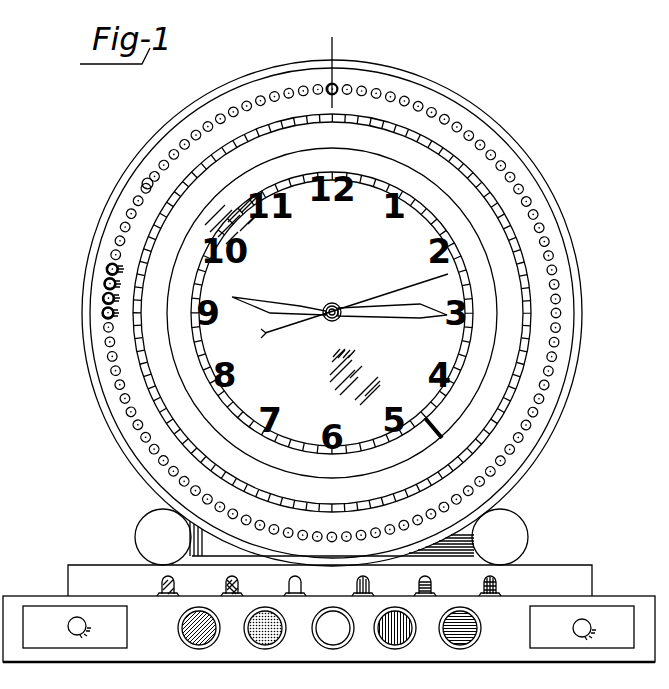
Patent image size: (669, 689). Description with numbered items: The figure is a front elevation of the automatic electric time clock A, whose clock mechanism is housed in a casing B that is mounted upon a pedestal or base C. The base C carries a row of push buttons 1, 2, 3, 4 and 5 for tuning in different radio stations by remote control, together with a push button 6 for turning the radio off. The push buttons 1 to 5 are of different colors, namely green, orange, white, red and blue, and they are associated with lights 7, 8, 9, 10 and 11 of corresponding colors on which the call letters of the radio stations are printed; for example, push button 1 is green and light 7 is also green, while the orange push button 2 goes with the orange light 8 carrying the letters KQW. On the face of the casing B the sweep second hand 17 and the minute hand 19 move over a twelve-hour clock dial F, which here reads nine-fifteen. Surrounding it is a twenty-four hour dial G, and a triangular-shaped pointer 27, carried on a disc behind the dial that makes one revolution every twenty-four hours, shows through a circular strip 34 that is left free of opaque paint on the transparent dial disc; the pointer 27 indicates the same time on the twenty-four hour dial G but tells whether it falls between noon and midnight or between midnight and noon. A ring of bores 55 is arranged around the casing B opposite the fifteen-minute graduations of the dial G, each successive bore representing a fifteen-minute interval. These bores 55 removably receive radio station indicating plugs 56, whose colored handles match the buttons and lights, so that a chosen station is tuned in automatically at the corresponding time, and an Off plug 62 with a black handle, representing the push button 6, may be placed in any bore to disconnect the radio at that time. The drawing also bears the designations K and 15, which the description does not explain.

The automatic electric time clock A is at (587, 229).
The casing B is at (586, 295).
The base C is at (558, 566).
The twelve-hour clock dial F is at (462, 344).
The twenty-four hour dial G is at (533, 337).
The ring of holes K is at (518, 457).
The alignment mark 15 is at (330, 40).
The sweep second hand 17 is at (421, 283).
The minute hand 19 is at (409, 313).
The triangular-shaped pointer 27 is at (432, 426).
The circular strip 34 is at (478, 253).
The bores 55 is at (146, 181).
The radio station indicating plugs 56 is at (336, 85).
The Off plug 62 is at (111, 266).
The push button 1 is at (175, 584).
The push button 2 is at (239, 584).
The push button 3 is at (302, 584).
The push button 4 is at (370, 584).
The push button 5 is at (432, 584).
The push button 6 is at (497, 584).
The light 7 is at (183, 641).
The light 8 is at (249, 641).
The light 9 is at (316, 642).
The light 10 is at (379, 641).
The light 11 is at (444, 642).